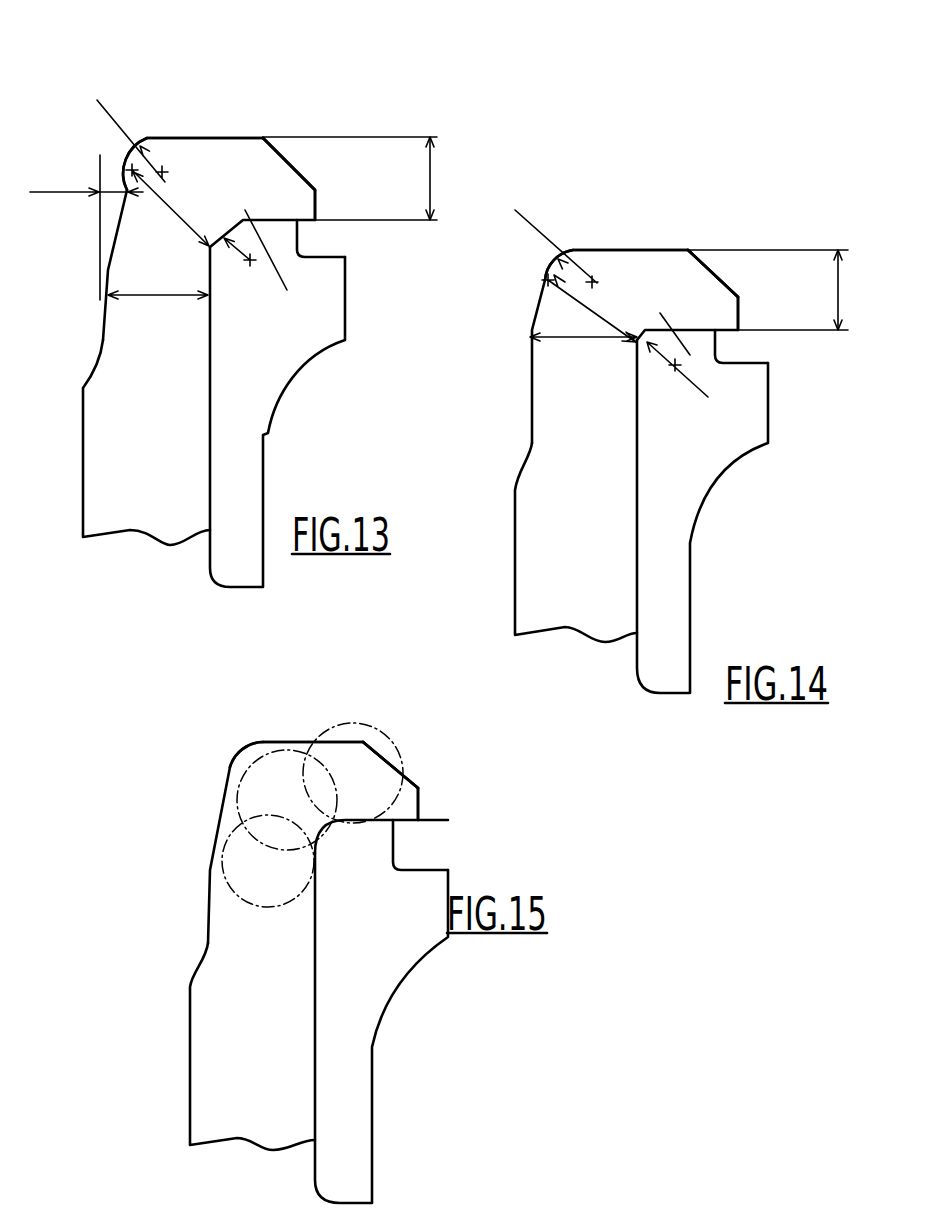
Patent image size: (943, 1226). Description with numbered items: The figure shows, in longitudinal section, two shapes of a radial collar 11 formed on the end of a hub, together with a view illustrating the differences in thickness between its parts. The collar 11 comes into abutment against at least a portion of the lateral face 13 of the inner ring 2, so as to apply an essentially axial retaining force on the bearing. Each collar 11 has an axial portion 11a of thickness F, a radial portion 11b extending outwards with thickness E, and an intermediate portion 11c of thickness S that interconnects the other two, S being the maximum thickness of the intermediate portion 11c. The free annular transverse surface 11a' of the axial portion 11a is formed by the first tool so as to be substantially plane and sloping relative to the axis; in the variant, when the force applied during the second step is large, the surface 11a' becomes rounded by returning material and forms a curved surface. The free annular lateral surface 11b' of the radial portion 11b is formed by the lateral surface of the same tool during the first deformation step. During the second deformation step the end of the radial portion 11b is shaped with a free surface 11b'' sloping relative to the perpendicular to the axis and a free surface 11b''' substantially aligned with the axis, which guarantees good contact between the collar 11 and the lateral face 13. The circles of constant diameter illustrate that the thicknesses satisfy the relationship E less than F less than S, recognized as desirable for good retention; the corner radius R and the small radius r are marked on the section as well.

In FIG. 13, the inner ring 2 is at (285, 340).
In FIG. 14, the inner ring 2 is at (706, 516).
In FIG. 15, the inner ring 2 is at (397, 940).
In FIG. 13, the radial collar 11 is at (227, 163).
In FIG. 14, the radial collar 11 is at (635, 270).
In FIG. 15, the radial collar 11 is at (300, 770).
In FIG. 13, the axial portion 11a is at (130, 427).
In FIG. 14, the axial portion 11a is at (547, 526).
In FIG. 15, the axial portion 11a is at (227, 982).
In FIG. 13, the free annular transverse surface 11a' is at (82, 265).
In FIG. 14, the free annular transverse surface 11a' is at (508, 361).
In FIG. 15, the free annular transverse surface 11a' is at (191, 855).
In FIG. 13, the radial portion 11b is at (312, 128).
In FIG. 14, the radial portion 11b is at (719, 252).
In FIG. 15, the radial portion 11b is at (360, 755).
In FIG. 13, the free annular lateral surface 11b' is at (213, 89).
In FIG. 14, the free annular lateral surface 11b' is at (630, 210).
In FIG. 15, the free annular lateral surface 11b' is at (313, 722).
In FIG. 13, the sloping free surface 11b'' is at (361, 126).
In FIG. 14, the sloping free surface 11b'' is at (761, 243).
In FIG. 15, the sloping free surface 11b'' is at (422, 750).
In FIG. 13, the axially aligned free surface 11b''' is at (355, 197).
In FIG. 14, the axially aligned free surface 11b''' is at (771, 308).
In FIG. 15, the axially aligned free surface 11b''' is at (460, 797).
In FIG. 13, the intermediate portion 11c is at (155, 140).
In FIG. 14, the intermediate portion 11c is at (575, 250).
In FIG. 15, the intermediate portion 11c is at (257, 753).
In FIG. 13, the lateral face 13 is at (345, 253).
In FIG. 14, the lateral face 13 is at (768, 370).
In FIG. 15, the lateral face 13 is at (448, 865).
In FIG. 13, the corner radius R is at (132, 134).
In FIG. 14, the corner radius R is at (556, 240).
In FIG. 13, the thickness of intermediate portion S is at (120, 227).
In FIG. 14, the thickness of intermediate portion S is at (589, 308).
In FIG. 13, the thickness of radial portion E is at (360, 178).
In FIG. 14, the thickness of radial portion E is at (778, 293).
In FIG. 13, the thickness of axial portion F is at (158, 279).
In FIG. 14, the thickness of axial portion F is at (583, 319).
In FIG. 13, the chamfer radius r is at (260, 253).
In FIG. 14, the chamfer radius r is at (678, 355).